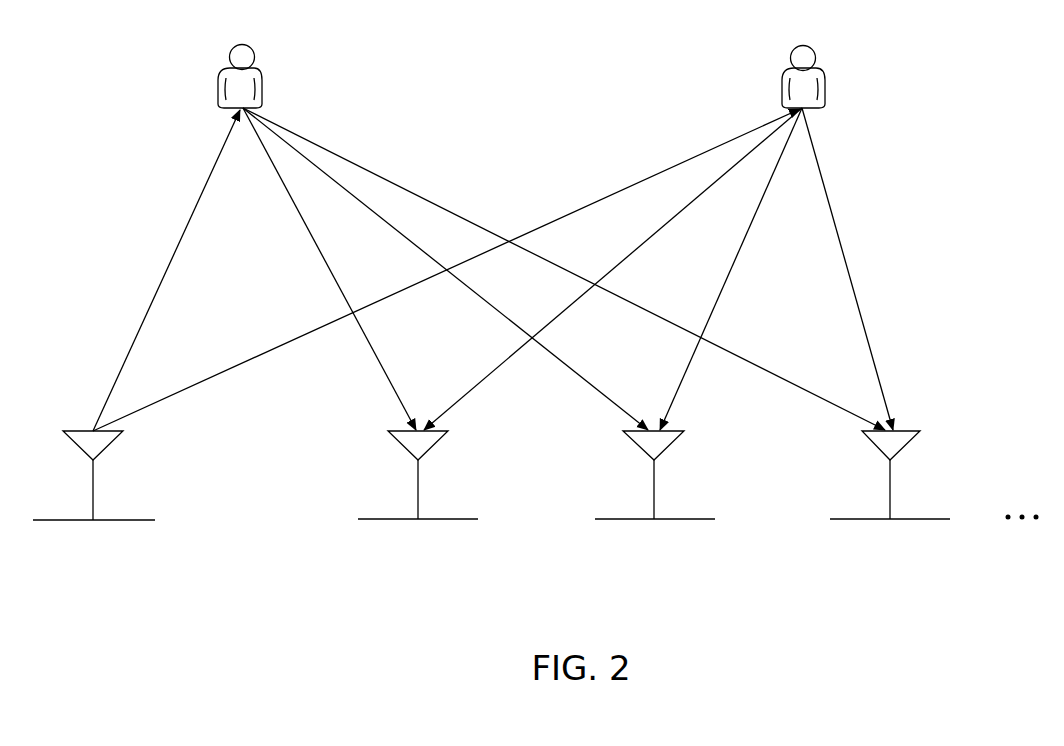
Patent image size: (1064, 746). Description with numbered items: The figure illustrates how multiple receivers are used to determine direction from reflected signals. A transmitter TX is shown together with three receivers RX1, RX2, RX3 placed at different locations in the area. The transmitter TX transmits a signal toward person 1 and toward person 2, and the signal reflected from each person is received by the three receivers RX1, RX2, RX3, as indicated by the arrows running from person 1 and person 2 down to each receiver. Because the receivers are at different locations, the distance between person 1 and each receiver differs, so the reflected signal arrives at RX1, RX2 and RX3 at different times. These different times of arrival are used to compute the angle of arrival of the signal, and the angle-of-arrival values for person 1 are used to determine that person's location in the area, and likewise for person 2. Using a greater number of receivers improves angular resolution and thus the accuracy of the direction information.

The person 1 person1 is at (241, 65).
The person 2 person2 is at (803, 65).
The transmitter TX is at (416, 335).
The first receiver RX1 is at (418, 496).
The second receiver RX2 is at (655, 496).
The third receiver RX3 is at (890, 496).